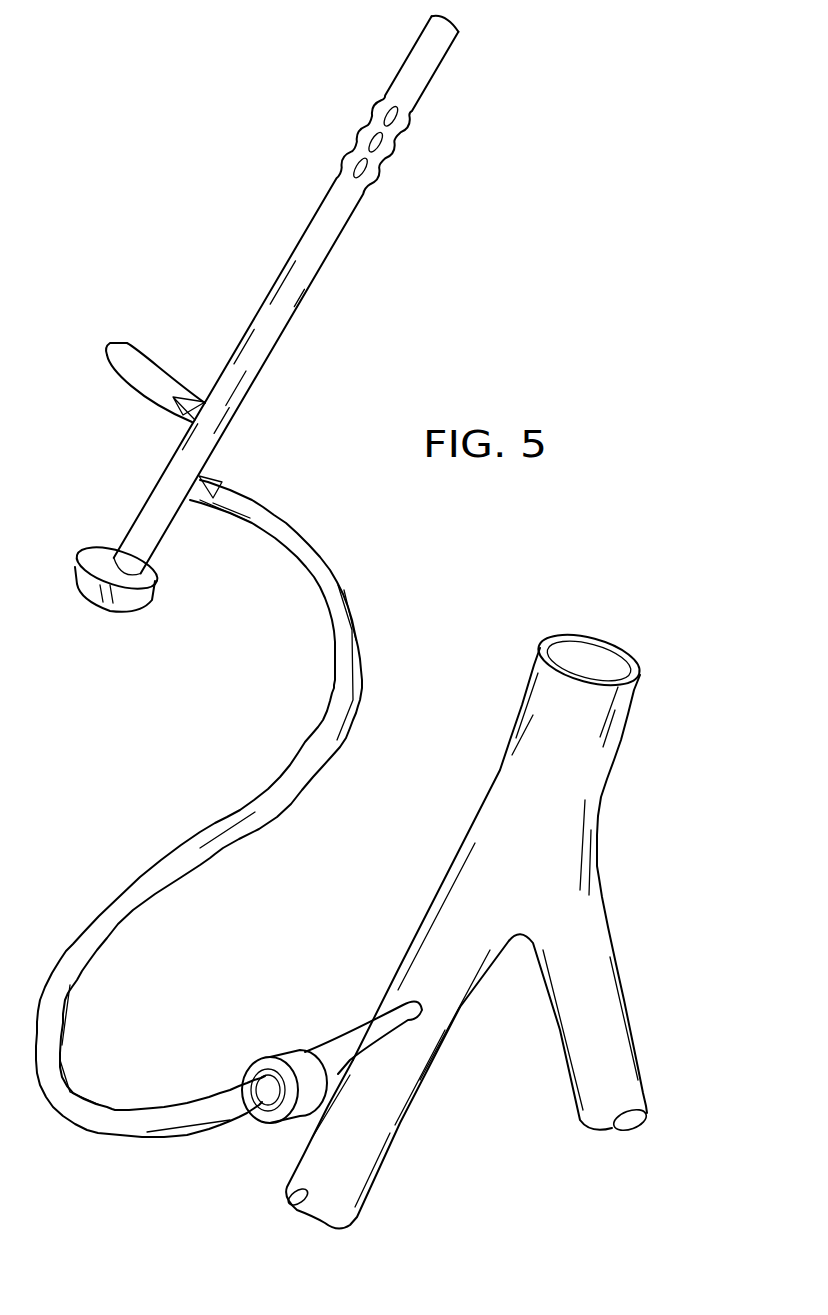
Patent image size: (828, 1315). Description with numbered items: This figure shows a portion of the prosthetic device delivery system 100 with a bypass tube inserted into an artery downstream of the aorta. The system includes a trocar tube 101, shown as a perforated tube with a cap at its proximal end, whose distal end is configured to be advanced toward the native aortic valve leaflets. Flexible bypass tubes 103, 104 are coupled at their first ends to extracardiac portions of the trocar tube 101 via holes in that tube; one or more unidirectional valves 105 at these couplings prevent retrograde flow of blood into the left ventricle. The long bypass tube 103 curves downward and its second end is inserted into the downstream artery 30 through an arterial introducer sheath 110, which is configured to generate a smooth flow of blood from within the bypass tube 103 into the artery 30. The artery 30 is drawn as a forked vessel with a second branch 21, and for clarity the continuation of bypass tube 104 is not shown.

The prosthetic device delivery system 100 is at (289, 353).
The trocar tube 101 is at (243, 352).
The flexible bypass tube 103 is at (262, 518).
The flexible bypass tube 104 is at (128, 363).
The unidirectional valve 105 is at (181, 418).
The arterial introducer sheath 110 is at (378, 1032).
The artery 30 is at (600, 695).
The second branch 21 is at (370, 1140).